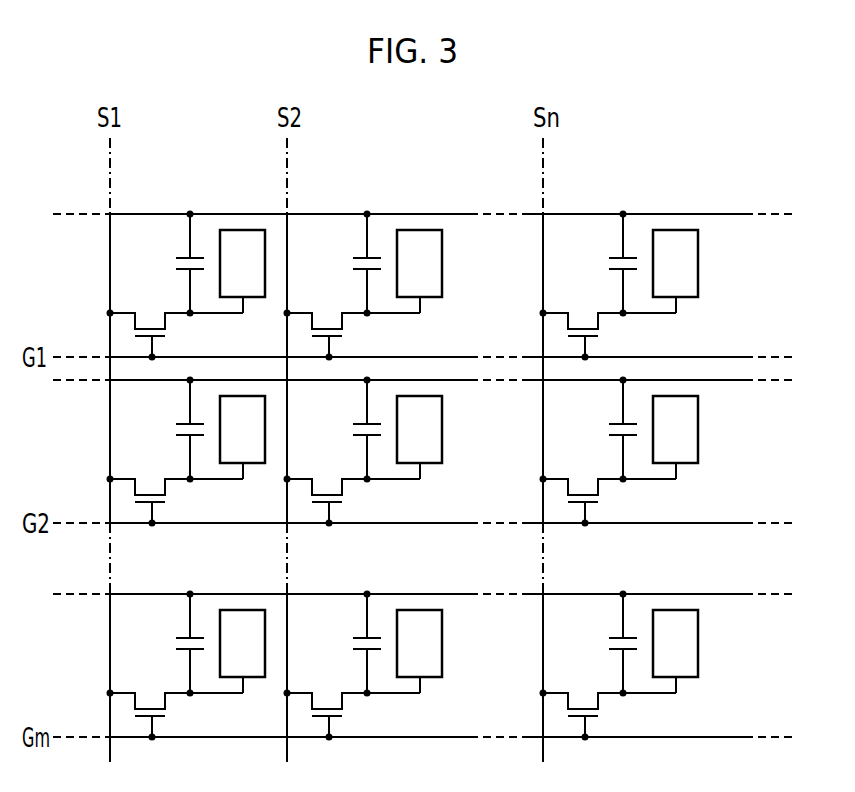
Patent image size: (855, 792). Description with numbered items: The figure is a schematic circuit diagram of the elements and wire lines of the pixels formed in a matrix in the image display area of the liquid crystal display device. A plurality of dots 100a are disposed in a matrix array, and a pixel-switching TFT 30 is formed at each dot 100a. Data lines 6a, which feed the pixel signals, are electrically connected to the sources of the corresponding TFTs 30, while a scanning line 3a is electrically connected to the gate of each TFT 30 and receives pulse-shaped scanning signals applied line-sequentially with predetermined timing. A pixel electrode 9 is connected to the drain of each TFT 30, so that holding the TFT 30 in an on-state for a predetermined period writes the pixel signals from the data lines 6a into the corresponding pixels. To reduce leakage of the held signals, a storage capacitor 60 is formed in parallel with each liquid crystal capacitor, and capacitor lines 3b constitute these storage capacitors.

The data line 6a is at (110, 196).
The capacitor line 3b is at (708, 214).
The scanning line 3a is at (723, 357).
The storage capacitor 60 is at (175, 262).
The pixel-switching TFT 30 is at (167, 331).
The pixel electrode 9 is at (257, 292).
The dot 100a is at (123, 269).